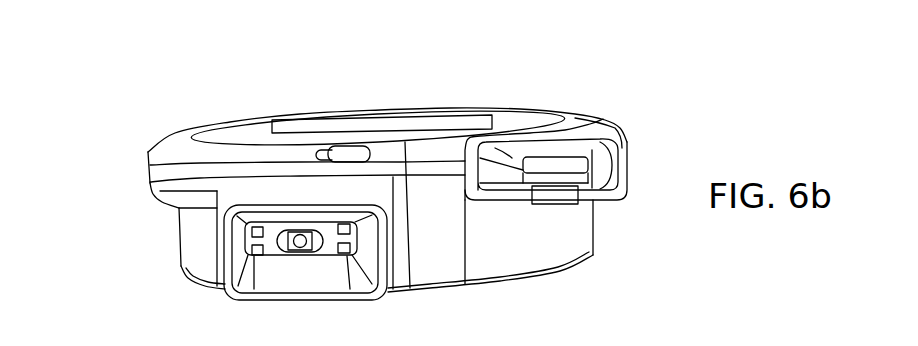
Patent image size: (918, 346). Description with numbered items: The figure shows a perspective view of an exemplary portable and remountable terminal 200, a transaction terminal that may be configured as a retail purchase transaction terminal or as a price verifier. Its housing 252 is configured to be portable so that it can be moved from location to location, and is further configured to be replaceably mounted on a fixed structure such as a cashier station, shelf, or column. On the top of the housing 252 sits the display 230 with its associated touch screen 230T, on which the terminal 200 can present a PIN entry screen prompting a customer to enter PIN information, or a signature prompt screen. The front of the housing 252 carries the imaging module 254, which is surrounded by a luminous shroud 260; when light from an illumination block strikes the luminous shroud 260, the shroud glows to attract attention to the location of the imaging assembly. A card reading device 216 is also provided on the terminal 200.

The terminal 200 is at (348, 97).
The display 230 is at (398, 90).
The touch screen 230T is at (382, 124).
The housing 252 is at (164, 197).
The luminous shroud 260 is at (394, 214).
The imaging module 254 is at (303, 262).
The card reading device 216 is at (564, 214).